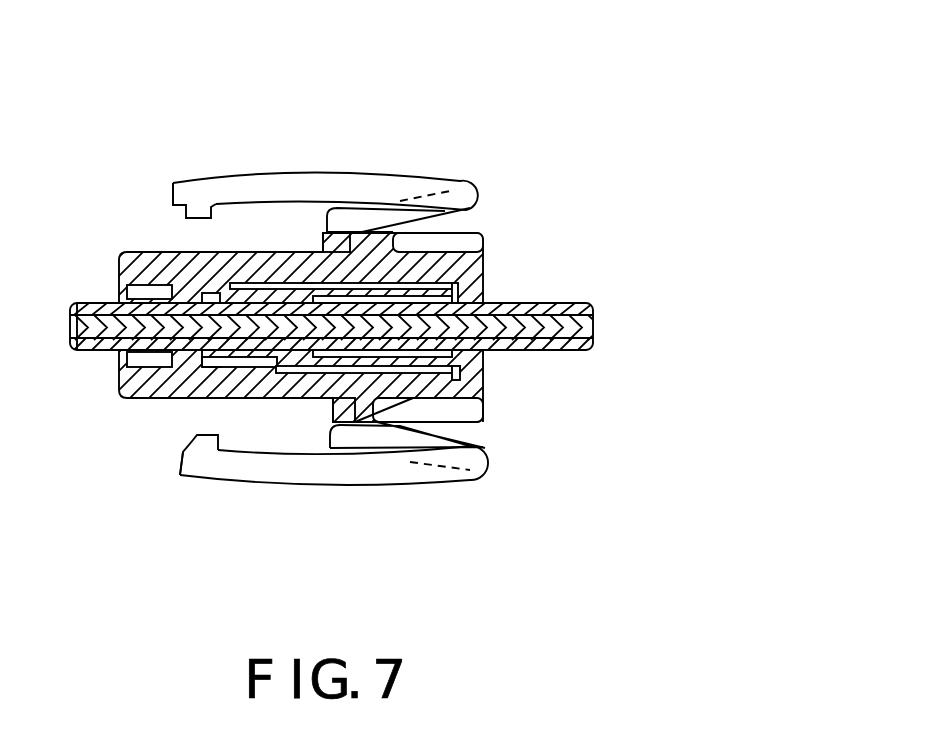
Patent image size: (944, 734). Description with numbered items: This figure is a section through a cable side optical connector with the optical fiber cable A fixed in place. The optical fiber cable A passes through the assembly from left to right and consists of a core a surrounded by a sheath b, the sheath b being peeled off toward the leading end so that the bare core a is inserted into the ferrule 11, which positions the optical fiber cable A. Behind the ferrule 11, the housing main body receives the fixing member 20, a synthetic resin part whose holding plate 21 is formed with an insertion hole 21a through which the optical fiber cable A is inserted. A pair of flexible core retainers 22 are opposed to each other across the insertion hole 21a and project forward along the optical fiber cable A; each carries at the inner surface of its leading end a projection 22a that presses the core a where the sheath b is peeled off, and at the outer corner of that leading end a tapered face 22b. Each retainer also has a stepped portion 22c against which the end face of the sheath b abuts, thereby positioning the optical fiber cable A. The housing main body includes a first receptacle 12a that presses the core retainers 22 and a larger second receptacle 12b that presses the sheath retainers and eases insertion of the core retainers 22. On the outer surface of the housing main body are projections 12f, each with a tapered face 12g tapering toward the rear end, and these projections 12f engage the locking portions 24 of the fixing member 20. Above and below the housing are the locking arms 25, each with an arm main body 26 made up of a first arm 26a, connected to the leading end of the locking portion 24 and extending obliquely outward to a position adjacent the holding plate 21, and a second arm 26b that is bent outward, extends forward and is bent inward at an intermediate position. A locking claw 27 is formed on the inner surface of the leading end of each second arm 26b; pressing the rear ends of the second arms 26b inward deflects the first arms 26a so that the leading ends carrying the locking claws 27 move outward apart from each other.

The ferrule 11 is at (76, 302).
The first receptacle 12a is at (210, 300).
The second receptacle 12b is at (312, 290).
The projections 12f is at (372, 421).
The tapered face 12g is at (352, 233).
The fixing member 20 is at (492, 251).
The holding plate 21 is at (485, 418).
The insertion hole 21a is at (493, 330).
The core retainers 22 is at (307, 357).
The projection 22a is at (227, 357).
The tapered face 22b is at (232, 355).
The stepped portion 22c is at (312, 300).
The locking portions 24 is at (334, 426).
The locking arms 25 is at (244, 173).
The arm main body 26 is at (359, 329).
The first arm 26a is at (362, 212).
The second arm 26b is at (315, 172).
The locking claw 27 is at (185, 208).
The optical fiber cable A is at (353, 333).
The core a is at (90, 340).
The sheath b is at (540, 318).